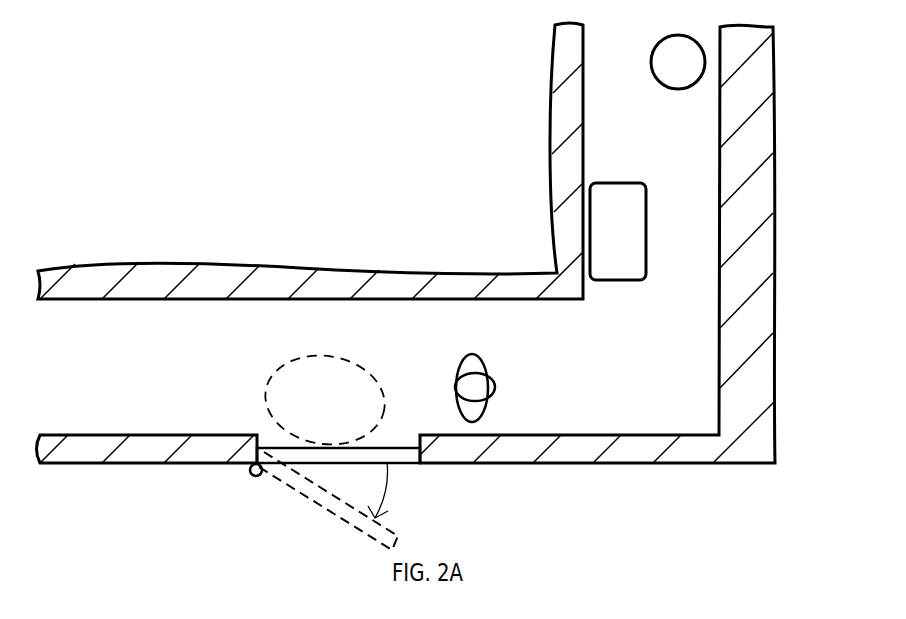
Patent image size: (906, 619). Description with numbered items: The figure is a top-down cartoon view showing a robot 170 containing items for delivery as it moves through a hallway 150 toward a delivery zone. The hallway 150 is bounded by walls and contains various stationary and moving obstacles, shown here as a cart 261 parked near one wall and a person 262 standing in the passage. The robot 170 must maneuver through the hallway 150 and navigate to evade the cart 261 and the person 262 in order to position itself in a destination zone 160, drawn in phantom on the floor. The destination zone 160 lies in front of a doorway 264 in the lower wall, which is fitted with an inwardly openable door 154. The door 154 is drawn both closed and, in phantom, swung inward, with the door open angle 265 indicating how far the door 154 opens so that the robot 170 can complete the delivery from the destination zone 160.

The hallway 150 is at (422, 113).
The inwardly openable door 154 is at (312, 452).
The destination zone 160 is at (325, 400).
The robot 170 is at (678, 62).
The cart 261 is at (618, 231).
The person 262 is at (480, 393).
The doorway 264 is at (403, 490).
The door open angle 265 is at (385, 488).